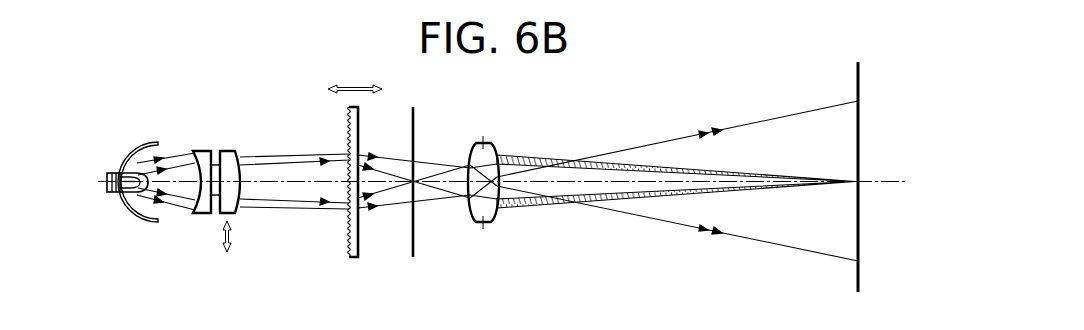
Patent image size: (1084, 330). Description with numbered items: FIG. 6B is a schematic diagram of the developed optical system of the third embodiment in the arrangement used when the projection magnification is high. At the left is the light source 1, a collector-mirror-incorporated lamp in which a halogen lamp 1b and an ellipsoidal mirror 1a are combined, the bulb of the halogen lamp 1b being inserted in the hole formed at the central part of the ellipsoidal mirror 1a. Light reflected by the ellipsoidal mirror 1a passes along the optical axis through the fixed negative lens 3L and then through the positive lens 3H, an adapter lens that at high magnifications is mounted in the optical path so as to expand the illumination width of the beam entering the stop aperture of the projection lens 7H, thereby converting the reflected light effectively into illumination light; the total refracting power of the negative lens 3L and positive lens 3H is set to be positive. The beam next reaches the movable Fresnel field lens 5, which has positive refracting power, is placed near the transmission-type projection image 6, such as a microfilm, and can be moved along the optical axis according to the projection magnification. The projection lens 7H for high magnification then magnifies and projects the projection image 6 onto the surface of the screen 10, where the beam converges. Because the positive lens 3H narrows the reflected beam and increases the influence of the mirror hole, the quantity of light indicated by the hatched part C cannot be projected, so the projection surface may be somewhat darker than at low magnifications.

The light source 1 is at (157, 105).
The ellipsoidal mirror 1a is at (133, 207).
The halogen lamp 1b is at (110, 173).
The negative lens 3L is at (203, 151).
The positive lens 3H is at (233, 151).
The field lens 5 is at (350, 258).
The projection image 6 is at (414, 242).
The projection lens for high magnification 7H is at (487, 143).
The hatched part C is at (748, 172).
The screen 10 is at (859, 112).